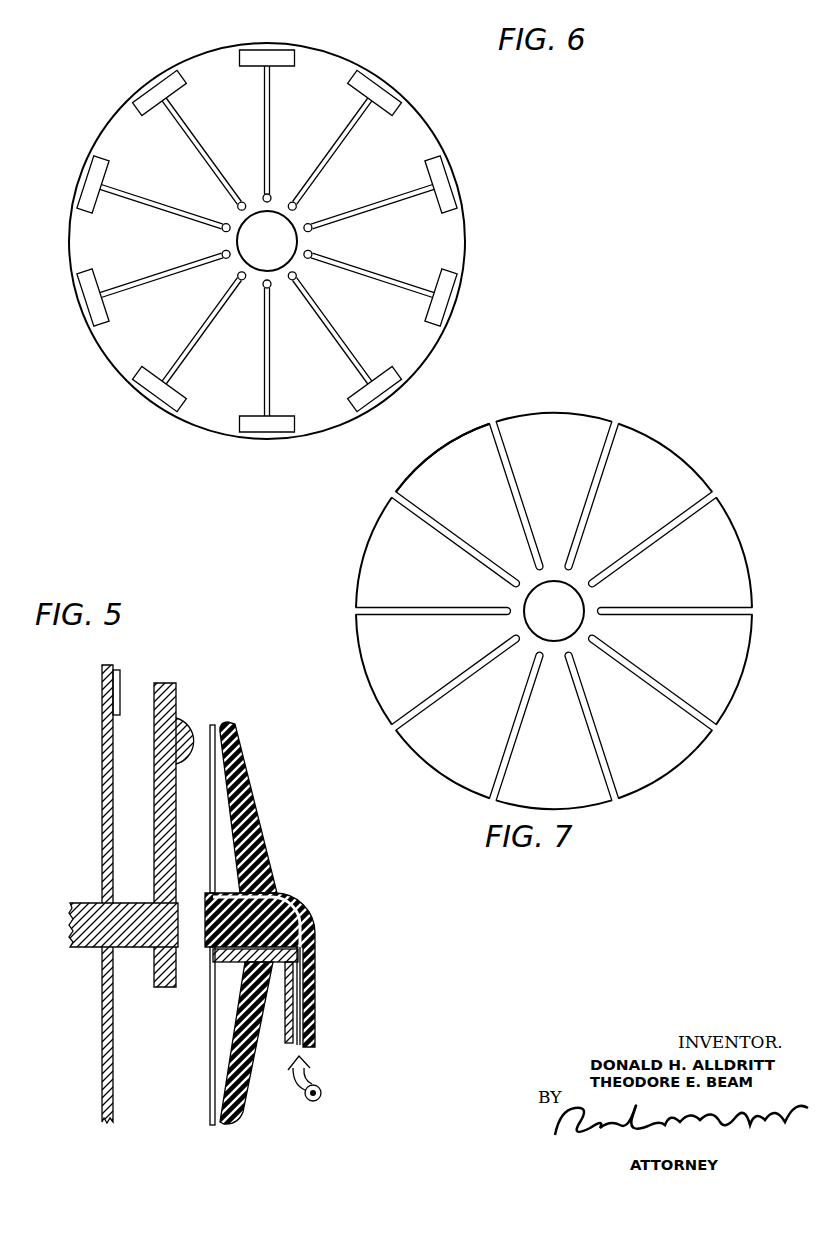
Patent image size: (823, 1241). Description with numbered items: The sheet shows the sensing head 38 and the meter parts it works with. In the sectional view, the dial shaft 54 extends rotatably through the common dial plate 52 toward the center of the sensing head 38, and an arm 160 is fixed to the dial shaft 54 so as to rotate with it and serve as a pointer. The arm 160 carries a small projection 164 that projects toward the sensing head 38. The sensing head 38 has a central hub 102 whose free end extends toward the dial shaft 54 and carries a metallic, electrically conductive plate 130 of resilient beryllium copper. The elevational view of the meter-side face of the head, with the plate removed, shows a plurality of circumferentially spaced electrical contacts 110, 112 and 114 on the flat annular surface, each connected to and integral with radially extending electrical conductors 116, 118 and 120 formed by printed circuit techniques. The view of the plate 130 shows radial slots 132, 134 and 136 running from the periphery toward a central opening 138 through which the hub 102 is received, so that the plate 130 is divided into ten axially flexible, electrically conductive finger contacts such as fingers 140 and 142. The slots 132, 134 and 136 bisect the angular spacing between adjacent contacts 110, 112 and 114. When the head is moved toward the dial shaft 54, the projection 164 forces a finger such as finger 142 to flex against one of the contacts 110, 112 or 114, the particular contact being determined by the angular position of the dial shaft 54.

In FIG. 5, the sensing head 38 is at (280, 893).
In FIG. 5, the common dial plate 52 is at (106, 768).
In FIG. 5, the dial shaft 54 is at (85, 946).
In FIG. 6, the hub 102 is at (285, 246).
In FIG. 6, the electrical contact 110 is at (256, 58).
In FIG. 5, the electrical contact 110 is at (222, 730).
In FIG. 6, the electrical contact 112 is at (363, 85).
In FIG. 6, the electrical contact 114 is at (436, 172).
In FIG. 6, the electrical conductor 116 is at (263, 112).
In FIG. 6, the electrical conductor 118 is at (347, 129).
In FIG. 6, the electrical conductor 120 is at (388, 200).
In FIG. 7, the plate 130 is at (722, 696).
In FIG. 5, the plate 130 is at (212, 780).
In FIG. 7, the radial slot 132 is at (412, 505).
In FIG. 7, the radial slot 134 is at (503, 444).
In FIG. 7, the radial slot 136 is at (603, 465).
In FIG. 7, the central opening 138 is at (578, 614).
In FIG. 7, the finger contact 140 is at (451, 455).
In FIG. 7, the finger contact 142 is at (578, 432).
In FIG. 5, the arm 160 is at (173, 700).
In FIG. 5, the projection 164 is at (186, 736).